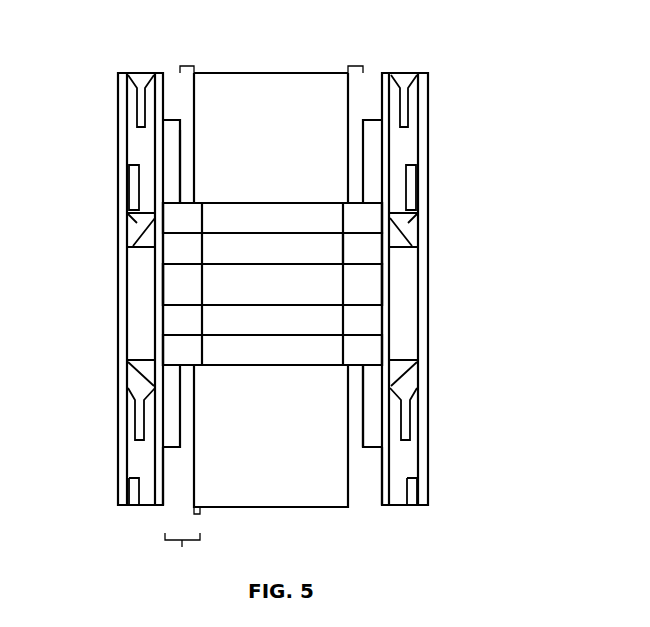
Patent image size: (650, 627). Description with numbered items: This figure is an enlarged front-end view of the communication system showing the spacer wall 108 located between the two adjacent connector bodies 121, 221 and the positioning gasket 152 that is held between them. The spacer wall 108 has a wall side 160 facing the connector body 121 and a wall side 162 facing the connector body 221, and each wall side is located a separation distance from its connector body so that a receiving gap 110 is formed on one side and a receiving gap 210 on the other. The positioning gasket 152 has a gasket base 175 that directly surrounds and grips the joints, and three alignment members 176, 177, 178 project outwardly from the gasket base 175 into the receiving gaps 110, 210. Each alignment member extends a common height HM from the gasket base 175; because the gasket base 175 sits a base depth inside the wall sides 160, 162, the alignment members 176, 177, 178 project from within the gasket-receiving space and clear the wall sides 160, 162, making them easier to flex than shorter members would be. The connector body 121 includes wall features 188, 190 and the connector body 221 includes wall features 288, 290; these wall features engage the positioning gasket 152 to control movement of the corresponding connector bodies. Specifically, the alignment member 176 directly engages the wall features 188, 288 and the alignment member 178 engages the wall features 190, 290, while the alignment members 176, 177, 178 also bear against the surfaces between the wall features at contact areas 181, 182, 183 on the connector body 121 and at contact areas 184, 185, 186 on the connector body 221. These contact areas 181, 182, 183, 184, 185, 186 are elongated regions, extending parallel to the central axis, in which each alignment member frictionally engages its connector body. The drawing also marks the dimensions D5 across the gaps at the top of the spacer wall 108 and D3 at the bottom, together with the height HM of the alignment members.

The spacer wall 108 is at (276, 102).
The receiving gap 110 is at (172, 505).
The connector body 121 is at (123, 108).
The positioning gasket 152 is at (253, 388).
The wall side 160 is at (188, 147).
The wall side 162 is at (358, 392).
The gasket base 175 is at (273, 253).
The alignment member 176 is at (343, 218).
The alignment member 177 is at (352, 270).
The alignment member 178 is at (352, 340).
The contact area 181 is at (150, 222).
The contact area 182 is at (163, 283).
The contact area 183 is at (160, 350).
The contact area 184 is at (382, 217).
The contact area 185 is at (382, 290).
The contact area 186 is at (392, 348).
The wall feature 188 is at (180, 131).
The wall feature 190 is at (180, 408).
The receiving gap 210 is at (366, 498).
The connector body 221 is at (422, 103).
The wall feature 288 is at (363, 175).
The wall feature 290 is at (365, 427).
The gap width D5 is at (187, 66).
The gap width D3 is at (197, 514).
The common height HM is at (182, 554).